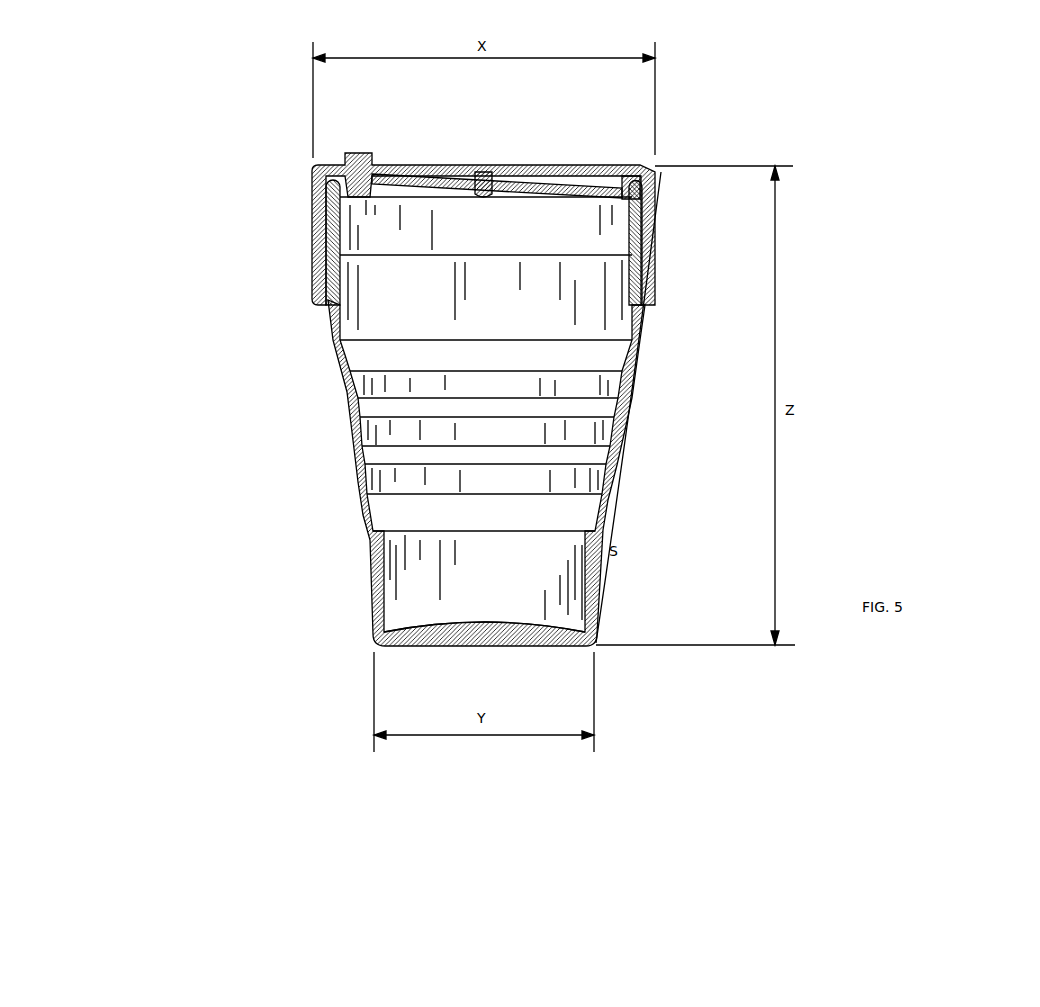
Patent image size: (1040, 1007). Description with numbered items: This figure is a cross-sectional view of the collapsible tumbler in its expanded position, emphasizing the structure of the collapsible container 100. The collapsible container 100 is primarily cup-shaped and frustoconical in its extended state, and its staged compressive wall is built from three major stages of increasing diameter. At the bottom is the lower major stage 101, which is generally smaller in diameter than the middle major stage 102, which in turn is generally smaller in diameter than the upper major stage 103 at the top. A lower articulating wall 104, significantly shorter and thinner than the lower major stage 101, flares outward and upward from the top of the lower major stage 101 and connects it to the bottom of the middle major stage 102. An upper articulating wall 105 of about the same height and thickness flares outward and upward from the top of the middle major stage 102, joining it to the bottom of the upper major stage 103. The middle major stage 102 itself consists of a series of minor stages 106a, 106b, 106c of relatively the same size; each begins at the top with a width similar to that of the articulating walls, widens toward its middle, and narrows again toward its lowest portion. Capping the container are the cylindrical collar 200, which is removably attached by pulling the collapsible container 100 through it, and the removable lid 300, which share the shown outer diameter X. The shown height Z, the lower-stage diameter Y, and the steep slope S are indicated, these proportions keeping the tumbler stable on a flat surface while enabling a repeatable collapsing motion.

The removable lid 300 is at (318, 168).
The cylindrical collar 200 is at (313, 247).
The upper major stage 103 is at (337, 270).
The upper articulating wall 105 is at (340, 348).
The minor stage 106a is at (350, 372).
The minor stage 106b is at (350, 422).
The minor stage 106c is at (358, 473).
The middle major stage 102 is at (352, 435).
The lower articulating wall 104 is at (367, 500).
The collapsible container 100 is at (370, 590).
The lower major stage 101 is at (593, 627).